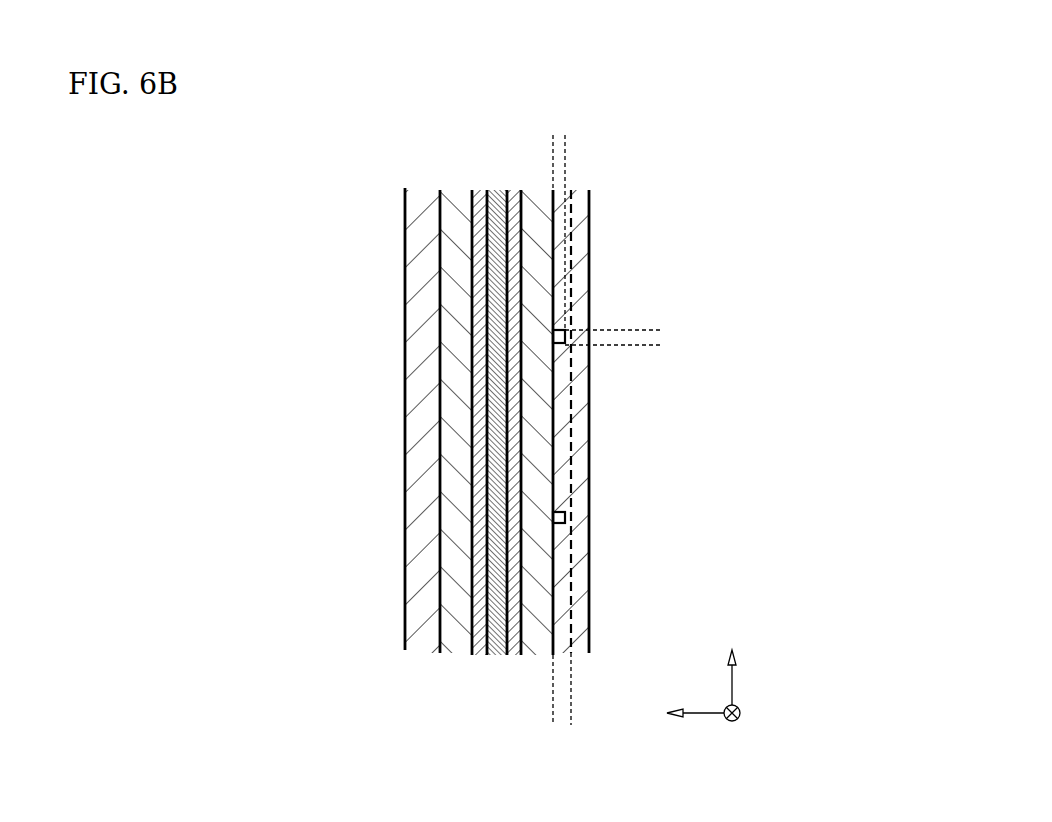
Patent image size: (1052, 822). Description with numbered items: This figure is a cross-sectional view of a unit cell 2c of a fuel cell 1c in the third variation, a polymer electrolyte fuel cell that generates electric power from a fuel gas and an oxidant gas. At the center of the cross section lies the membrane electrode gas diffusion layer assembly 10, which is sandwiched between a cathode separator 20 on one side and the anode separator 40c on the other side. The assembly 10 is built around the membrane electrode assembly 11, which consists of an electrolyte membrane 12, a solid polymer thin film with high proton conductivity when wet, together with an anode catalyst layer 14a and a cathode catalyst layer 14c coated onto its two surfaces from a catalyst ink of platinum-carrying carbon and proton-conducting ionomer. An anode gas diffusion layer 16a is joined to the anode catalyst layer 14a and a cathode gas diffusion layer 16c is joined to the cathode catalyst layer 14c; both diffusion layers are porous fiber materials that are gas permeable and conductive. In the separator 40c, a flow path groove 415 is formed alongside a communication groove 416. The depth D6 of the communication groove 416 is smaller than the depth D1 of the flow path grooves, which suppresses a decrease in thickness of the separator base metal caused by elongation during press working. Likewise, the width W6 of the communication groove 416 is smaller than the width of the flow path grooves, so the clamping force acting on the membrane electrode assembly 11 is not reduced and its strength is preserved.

The fuel cell 1c is at (655, 90).
The unit cell 2c is at (643, 163).
The membrane electrode gas diffusion layer assembly (MEGA) 10 is at (550, 56).
The membrane electrode assembly (MEA) 11 is at (535, 92).
The electrolyte membrane 12 is at (500, 195).
The anode catalyst layer 14a is at (519, 213).
The cathode catalyst layer 14c is at (480, 213).
The anode gas diffusion layer 16a is at (537, 195).
The cathode gas diffusion layer 16c is at (457, 200).
The cathode separator 20 is at (405, 195).
The separator 40c is at (610, 420).
The groove 415 is at (584, 620).
The communication groove 416 is at (558, 330).
The depth of the communication groove D6 is at (594, 137).
The depth of the groove D1 is at (600, 718).
The width of the communicating groove W6 is at (662, 300).